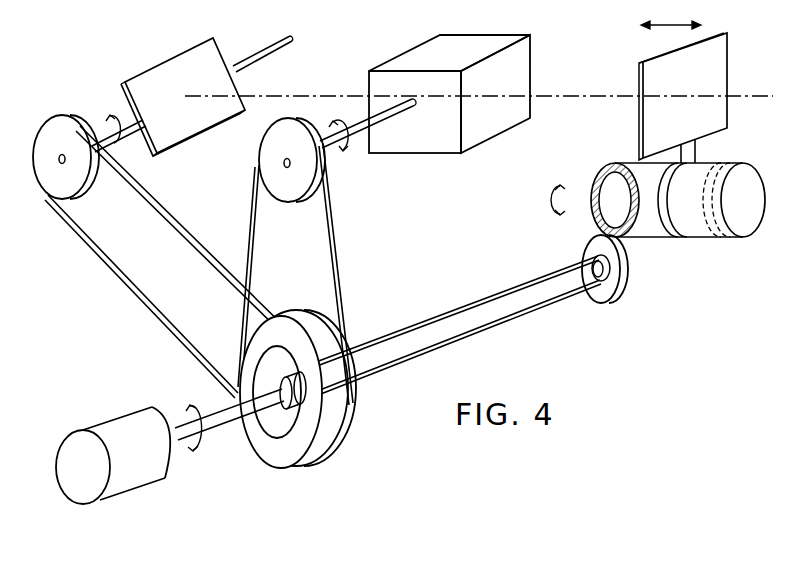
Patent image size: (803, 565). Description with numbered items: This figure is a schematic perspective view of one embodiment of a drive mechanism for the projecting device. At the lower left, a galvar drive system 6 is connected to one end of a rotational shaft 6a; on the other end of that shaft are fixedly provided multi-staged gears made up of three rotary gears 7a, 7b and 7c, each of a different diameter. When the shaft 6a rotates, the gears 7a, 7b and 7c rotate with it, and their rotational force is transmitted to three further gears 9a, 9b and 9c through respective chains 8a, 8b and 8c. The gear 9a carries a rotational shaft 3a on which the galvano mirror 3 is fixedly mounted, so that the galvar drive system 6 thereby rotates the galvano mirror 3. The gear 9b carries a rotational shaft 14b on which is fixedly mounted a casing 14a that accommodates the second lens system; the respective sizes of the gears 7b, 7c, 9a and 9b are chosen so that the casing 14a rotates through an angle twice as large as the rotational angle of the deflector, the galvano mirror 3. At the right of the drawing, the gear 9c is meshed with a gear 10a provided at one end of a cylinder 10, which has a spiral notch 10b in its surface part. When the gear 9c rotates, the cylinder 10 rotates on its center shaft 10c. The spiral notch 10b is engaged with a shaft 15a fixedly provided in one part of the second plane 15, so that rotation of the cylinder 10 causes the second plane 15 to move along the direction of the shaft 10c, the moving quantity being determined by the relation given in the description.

The galvano mirror 3 is at (213, 46).
The rotational shaft 3a is at (272, 58).
The galvar drive system 6 is at (123, 423).
The rotational shaft 6a is at (222, 413).
The rotary gear 7a is at (267, 420).
The rotary gear 7b is at (302, 427).
The rotary gear 7c is at (333, 418).
The chain 8a is at (137, 288).
The chain 8b is at (335, 252).
The chain 8c is at (497, 327).
The gear 9a is at (78, 185).
The gear 9b is at (288, 195).
The gear 9c is at (608, 295).
The cylinder 10 is at (700, 237).
The gear 10a is at (590, 181).
The spiral notch 10b is at (667, 228).
The center shaft 10c is at (577, 202).
The casing 14a is at (479, 35).
The rotational shaft 14b is at (357, 138).
The second plane 15 is at (728, 66).
The shaft 15a is at (698, 143).